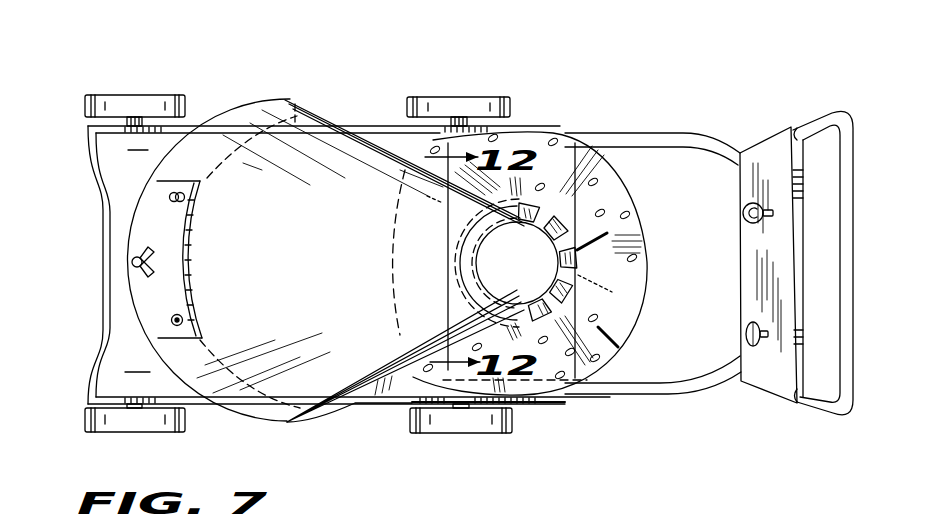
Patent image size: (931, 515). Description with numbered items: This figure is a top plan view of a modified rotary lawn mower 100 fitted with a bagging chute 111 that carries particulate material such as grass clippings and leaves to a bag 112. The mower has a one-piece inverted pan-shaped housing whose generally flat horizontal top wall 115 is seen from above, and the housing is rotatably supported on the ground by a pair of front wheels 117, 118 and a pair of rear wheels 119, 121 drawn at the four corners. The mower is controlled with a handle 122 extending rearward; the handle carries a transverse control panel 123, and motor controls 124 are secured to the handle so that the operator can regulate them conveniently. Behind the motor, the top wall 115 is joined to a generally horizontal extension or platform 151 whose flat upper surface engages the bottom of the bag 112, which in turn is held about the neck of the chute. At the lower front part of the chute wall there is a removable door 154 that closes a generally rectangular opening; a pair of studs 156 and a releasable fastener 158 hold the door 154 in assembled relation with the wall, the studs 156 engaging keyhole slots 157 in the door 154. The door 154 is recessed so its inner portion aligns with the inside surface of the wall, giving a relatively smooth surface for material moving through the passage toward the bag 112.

The rotary lawn mower 100 is at (305, 92).
The bagging chute 111 is at (280, 330).
The bag 112 is at (615, 205).
The top wall 115 is at (292, 428).
The front wheel 117 is at (97, 95).
The front wheel 118 is at (85, 418).
The rear wheel 119 is at (478, 97).
The rear wheel 121 is at (470, 434).
The handle 122 is at (833, 112).
The control panel 123 is at (770, 137).
The motor controls 124 is at (743, 220).
The platform 151 is at (553, 398).
The door 154 is at (165, 232).
The studs 156 is at (200, 200).
The keyhole slots 157 is at (170, 196).
The releasable fastener 158 is at (130, 262).